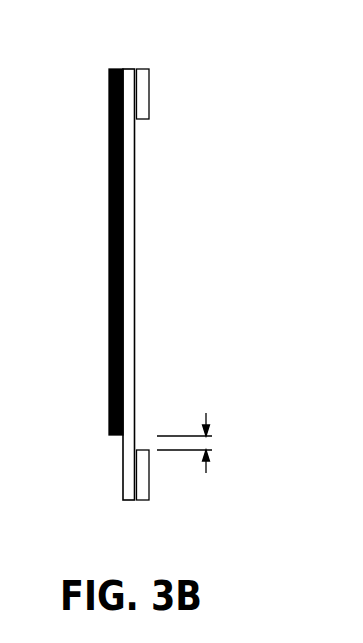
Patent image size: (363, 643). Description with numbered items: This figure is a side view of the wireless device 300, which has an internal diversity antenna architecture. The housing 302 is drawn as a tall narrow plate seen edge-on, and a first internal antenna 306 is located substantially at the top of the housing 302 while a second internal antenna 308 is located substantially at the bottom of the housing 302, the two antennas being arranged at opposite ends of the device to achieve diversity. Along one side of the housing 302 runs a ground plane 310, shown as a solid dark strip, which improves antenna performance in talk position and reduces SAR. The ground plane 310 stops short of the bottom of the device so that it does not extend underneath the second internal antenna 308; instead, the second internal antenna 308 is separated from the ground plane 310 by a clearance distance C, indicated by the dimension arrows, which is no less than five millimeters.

The wireless device 300 is at (142, 26).
The housing 302 is at (135, 282).
The first internal antenna 306 is at (149, 95).
The second internal antenna 308 is at (149, 474).
The ground plane 310 is at (109, 200).
The clearance distance C is at (197, 443).